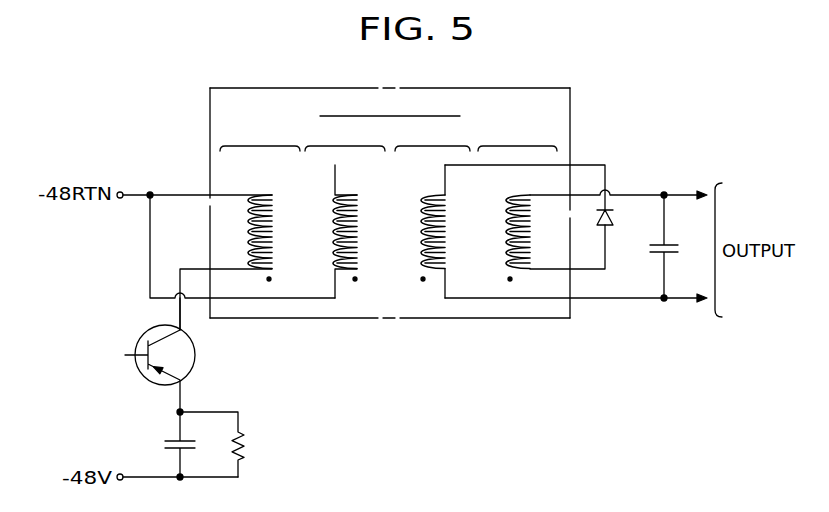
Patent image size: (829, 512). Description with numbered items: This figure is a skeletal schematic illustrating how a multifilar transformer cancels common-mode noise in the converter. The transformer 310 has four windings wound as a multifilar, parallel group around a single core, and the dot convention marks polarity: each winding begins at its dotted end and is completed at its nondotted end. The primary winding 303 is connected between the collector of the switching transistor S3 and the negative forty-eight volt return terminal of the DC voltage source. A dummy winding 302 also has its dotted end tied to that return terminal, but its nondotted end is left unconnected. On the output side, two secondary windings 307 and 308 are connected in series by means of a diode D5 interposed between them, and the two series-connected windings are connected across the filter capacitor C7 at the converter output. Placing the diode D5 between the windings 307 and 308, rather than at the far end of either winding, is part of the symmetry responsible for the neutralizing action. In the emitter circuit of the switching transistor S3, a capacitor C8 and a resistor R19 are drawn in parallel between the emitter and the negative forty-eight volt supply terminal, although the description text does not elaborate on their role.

The transformer 310 is at (571, 92).
The primary winding 303 is at (260, 203).
The dummy winding 302 is at (345, 211).
The secondary winding 307 is at (432, 211).
The secondary winding 308 is at (517, 203).
The switching transistor S3 is at (173, 355).
The capacitor C8 is at (193, 444).
The resistor R19 is at (232, 444).
The diode D5 is at (618, 221).
The filter capacitor C7 is at (650, 246).